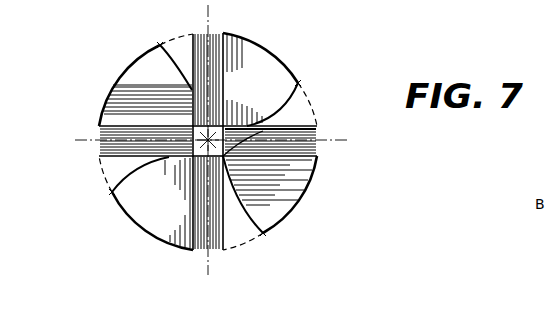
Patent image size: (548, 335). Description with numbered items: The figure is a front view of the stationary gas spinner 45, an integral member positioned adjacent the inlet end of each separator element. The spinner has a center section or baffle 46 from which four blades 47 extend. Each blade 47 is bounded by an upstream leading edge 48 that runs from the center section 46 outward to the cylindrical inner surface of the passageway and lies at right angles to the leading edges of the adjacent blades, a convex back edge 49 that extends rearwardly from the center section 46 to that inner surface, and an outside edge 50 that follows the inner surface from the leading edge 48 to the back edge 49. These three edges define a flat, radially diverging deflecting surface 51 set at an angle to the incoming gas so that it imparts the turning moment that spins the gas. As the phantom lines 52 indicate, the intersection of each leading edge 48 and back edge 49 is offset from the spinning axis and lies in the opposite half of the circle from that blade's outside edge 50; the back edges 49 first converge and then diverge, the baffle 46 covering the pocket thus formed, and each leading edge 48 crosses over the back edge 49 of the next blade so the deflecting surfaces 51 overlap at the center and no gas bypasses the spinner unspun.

The spinner 45 is at (286, 48).
The center section or baffle 46 is at (247, 168).
The blade 47 is at (133, 78).
The upstream leading edge 48 is at (191, 55).
The convex back edge 49 is at (160, 44).
The outside edge 50 is at (110, 91).
The deflecting surface 51 is at (107, 108).
The phantom lines 52 is at (186, 124).